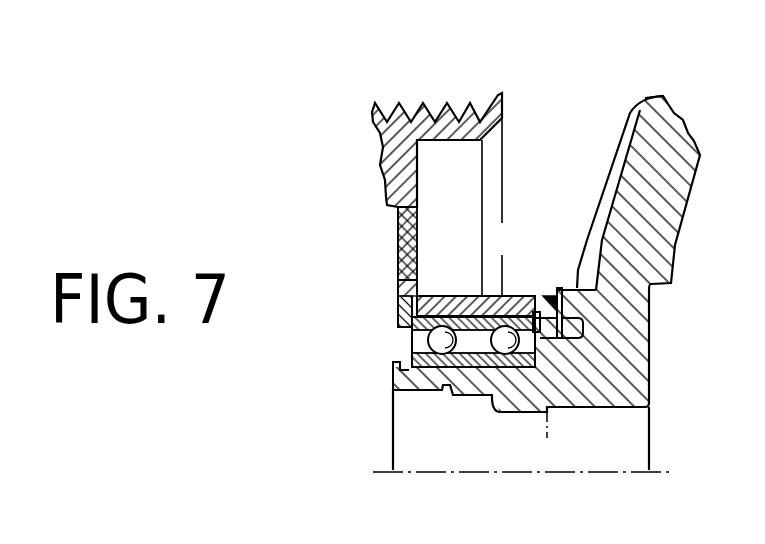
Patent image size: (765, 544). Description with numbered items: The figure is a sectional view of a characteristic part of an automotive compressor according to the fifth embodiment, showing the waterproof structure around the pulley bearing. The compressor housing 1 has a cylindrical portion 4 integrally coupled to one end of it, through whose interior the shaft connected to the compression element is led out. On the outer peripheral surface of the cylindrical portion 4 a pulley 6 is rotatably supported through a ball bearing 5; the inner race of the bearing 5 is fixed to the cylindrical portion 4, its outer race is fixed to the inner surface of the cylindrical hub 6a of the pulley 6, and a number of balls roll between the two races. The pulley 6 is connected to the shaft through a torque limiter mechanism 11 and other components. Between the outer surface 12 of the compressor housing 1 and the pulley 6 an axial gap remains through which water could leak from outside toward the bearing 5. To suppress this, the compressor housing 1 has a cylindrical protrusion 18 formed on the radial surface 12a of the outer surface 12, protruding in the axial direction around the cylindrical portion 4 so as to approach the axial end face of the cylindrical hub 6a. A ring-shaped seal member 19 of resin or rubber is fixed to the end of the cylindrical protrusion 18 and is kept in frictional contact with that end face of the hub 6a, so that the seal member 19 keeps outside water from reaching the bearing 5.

The compressor housing 1 is at (647, 135).
The cylindrical portion 4 is at (567, 393).
The ball bearing 5 is at (398, 338).
The pulley 6 is at (505, 108).
The cylindrical hub 6a is at (457, 294).
The torque limiter mechanism 11 is at (398, 250).
The outer surface 12 is at (595, 190).
The radial surface 12a is at (580, 287).
The cylindrical protrusion 18 is at (559, 289).
The ring-shaped seal member 19 is at (545, 295).